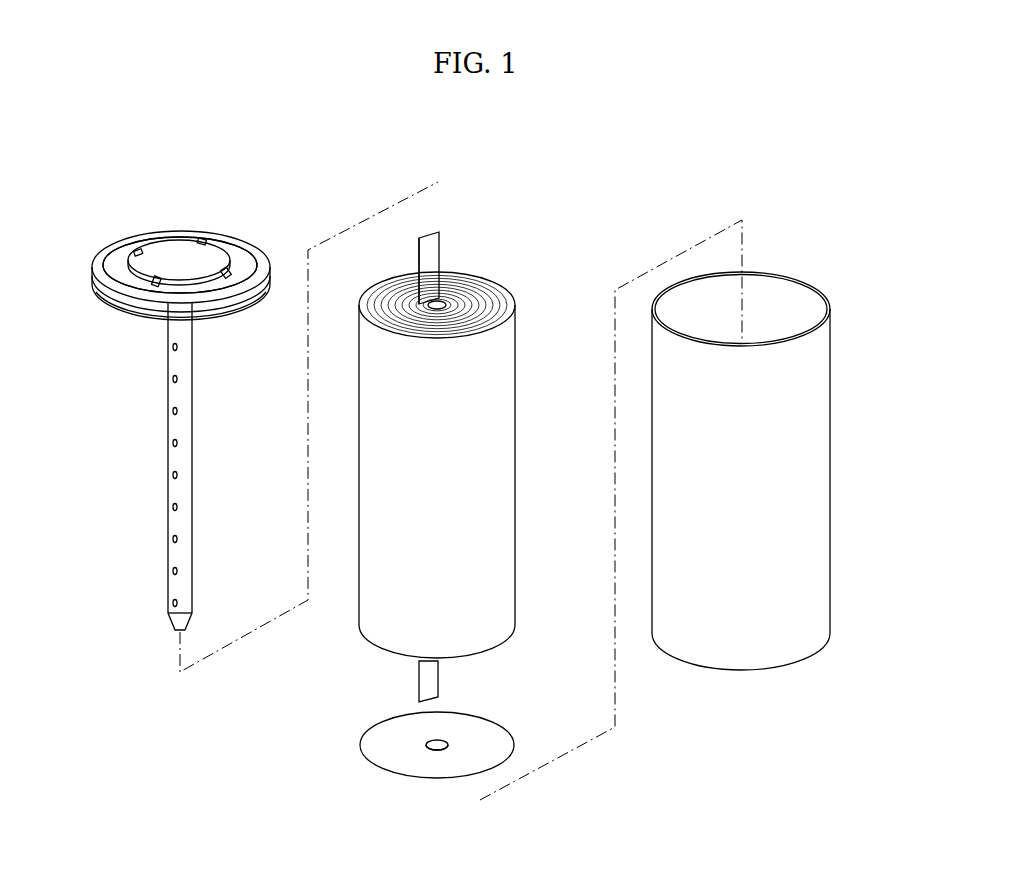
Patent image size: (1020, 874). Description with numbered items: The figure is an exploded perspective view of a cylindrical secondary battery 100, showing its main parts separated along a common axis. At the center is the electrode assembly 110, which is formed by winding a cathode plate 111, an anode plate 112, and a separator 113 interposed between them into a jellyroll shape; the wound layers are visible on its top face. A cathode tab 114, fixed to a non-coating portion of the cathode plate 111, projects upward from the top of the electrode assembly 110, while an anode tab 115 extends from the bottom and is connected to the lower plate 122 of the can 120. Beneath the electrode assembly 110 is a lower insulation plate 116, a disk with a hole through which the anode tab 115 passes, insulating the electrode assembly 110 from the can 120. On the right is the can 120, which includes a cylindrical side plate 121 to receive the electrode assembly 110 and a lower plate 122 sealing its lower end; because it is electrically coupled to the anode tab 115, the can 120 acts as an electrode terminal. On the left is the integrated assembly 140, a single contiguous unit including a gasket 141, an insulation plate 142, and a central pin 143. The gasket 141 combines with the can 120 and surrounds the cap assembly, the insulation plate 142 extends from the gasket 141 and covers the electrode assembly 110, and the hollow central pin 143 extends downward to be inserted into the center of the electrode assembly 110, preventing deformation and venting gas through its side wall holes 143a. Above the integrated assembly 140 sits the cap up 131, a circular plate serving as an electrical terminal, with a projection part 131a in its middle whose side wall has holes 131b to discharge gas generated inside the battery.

The cylindrical secondary battery 100 is at (175, 133).
The electrode assembly 110 is at (521, 347).
The cathode plate 111 is at (473, 276).
The anode plate 112 is at (497, 292).
The separator 113 is at (485, 280).
The cathode tab 114 is at (427, 259).
The anode tab 115 is at (428, 682).
The lower insulation plate 116 is at (375, 747).
The can 120 is at (805, 440).
The cylindrical side plate 121 is at (818, 603).
The lower plate 122 is at (768, 672).
The cap up 131 is at (240, 252).
The projection part 131a is at (167, 248).
The holes 131b is at (200, 240).
The integrated assembly 140 is at (60, 336).
The gasket 141 is at (128, 298).
The insulation plate 142 is at (150, 320).
The central pin 143 is at (170, 398).
The side wall holes 143a is at (175, 473).